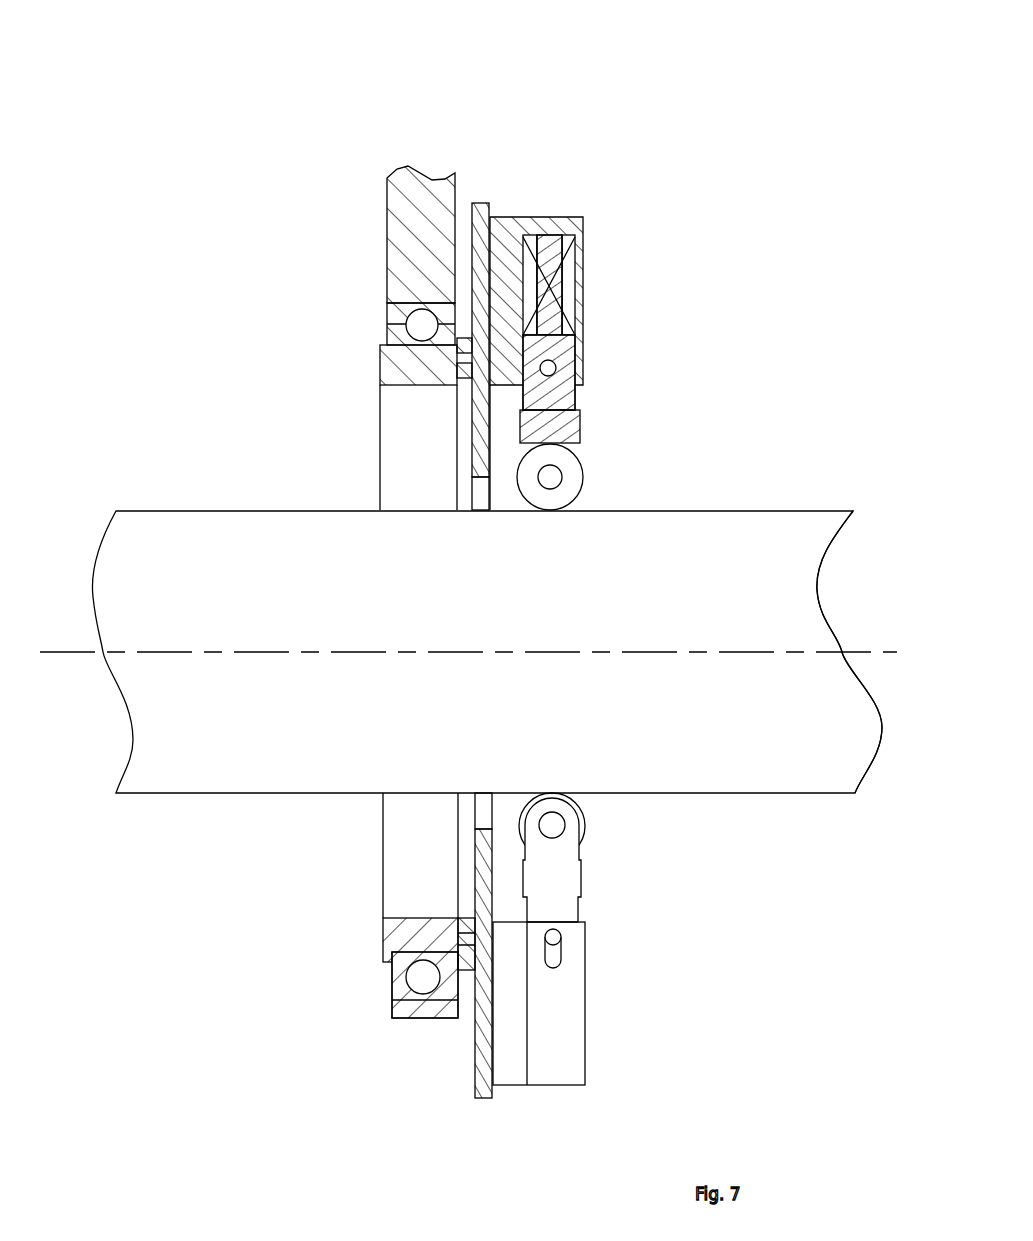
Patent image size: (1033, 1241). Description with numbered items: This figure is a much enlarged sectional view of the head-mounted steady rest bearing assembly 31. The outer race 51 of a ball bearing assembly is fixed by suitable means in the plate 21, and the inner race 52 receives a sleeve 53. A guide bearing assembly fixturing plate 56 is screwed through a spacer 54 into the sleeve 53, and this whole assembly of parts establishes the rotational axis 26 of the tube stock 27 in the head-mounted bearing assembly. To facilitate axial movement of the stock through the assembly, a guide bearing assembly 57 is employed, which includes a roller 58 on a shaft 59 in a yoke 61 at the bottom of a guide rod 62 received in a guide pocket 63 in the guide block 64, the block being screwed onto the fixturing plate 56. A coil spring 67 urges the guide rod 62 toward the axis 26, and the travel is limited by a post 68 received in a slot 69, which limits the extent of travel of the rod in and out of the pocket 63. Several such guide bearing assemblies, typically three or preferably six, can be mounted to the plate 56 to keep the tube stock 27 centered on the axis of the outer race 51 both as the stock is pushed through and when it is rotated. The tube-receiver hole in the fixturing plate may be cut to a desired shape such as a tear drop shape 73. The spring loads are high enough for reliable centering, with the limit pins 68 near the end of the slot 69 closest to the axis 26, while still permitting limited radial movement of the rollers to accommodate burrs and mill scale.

The plate 21 is at (427, 198).
The rotational axis 26 is at (308, 655).
The tube stock 27 is at (660, 778).
The bearing assembly 31 is at (471, 945).
The outer race 51 is at (395, 318).
The inner race 52 is at (384, 340).
The sleeve 53 is at (393, 372).
The spacer 54 is at (470, 386).
The guide bearing assembly fixturing plate 56 is at (480, 457).
The guide bearing assembly 57 is at (652, 518).
The roller 58 is at (583, 483).
The shaft 59 is at (553, 478).
The yoke 61 is at (580, 430).
The guide rod 62 is at (553, 355).
The guide pocket 63 is at (577, 331).
The guide block 64 is at (508, 223).
The coil spring 67 is at (563, 266).
The post 68 is at (553, 366).
The slot 69 is at (565, 960).
The tear drop shape 73 is at (483, 498).